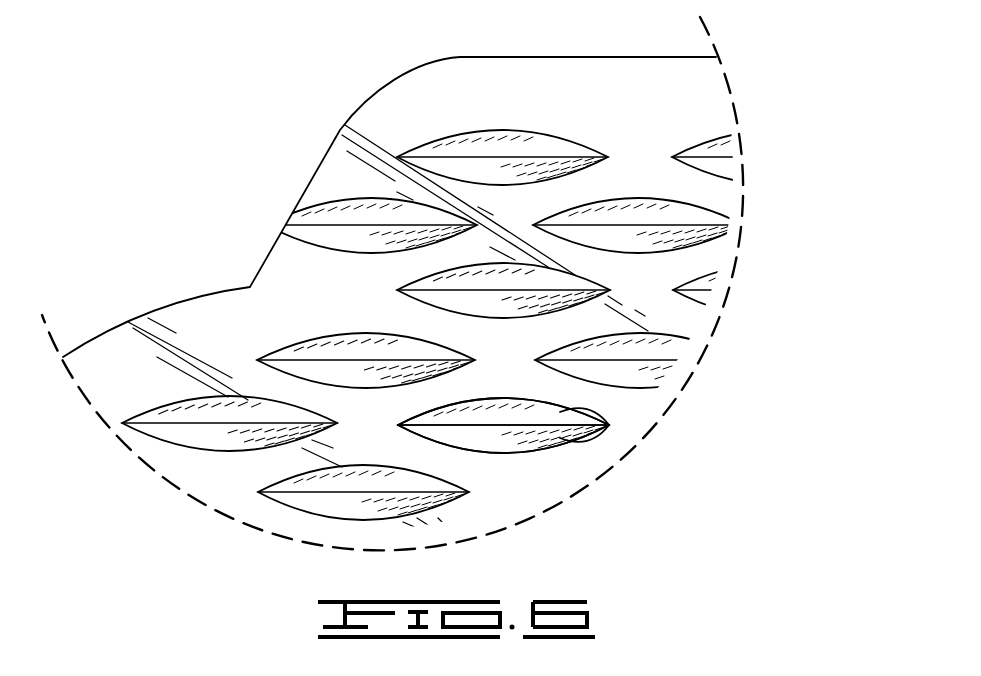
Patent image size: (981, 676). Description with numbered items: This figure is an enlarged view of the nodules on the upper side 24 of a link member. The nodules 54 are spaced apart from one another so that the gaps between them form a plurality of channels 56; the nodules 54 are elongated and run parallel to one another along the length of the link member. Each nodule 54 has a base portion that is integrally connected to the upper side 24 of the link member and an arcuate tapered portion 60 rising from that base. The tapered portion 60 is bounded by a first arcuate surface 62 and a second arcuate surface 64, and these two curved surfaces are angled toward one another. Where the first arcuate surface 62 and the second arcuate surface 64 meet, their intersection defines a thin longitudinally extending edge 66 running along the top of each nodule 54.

The upper side 24 is at (208, 473).
The nodules 54 is at (503, 325).
The channels 56 is at (250, 375).
The arcuate tapered portion 60 is at (580, 413).
The first arcuate surface 62 is at (518, 445).
The second arcuate surface 64 is at (498, 408).
The longitudinally extending edge 66 is at (570, 428).